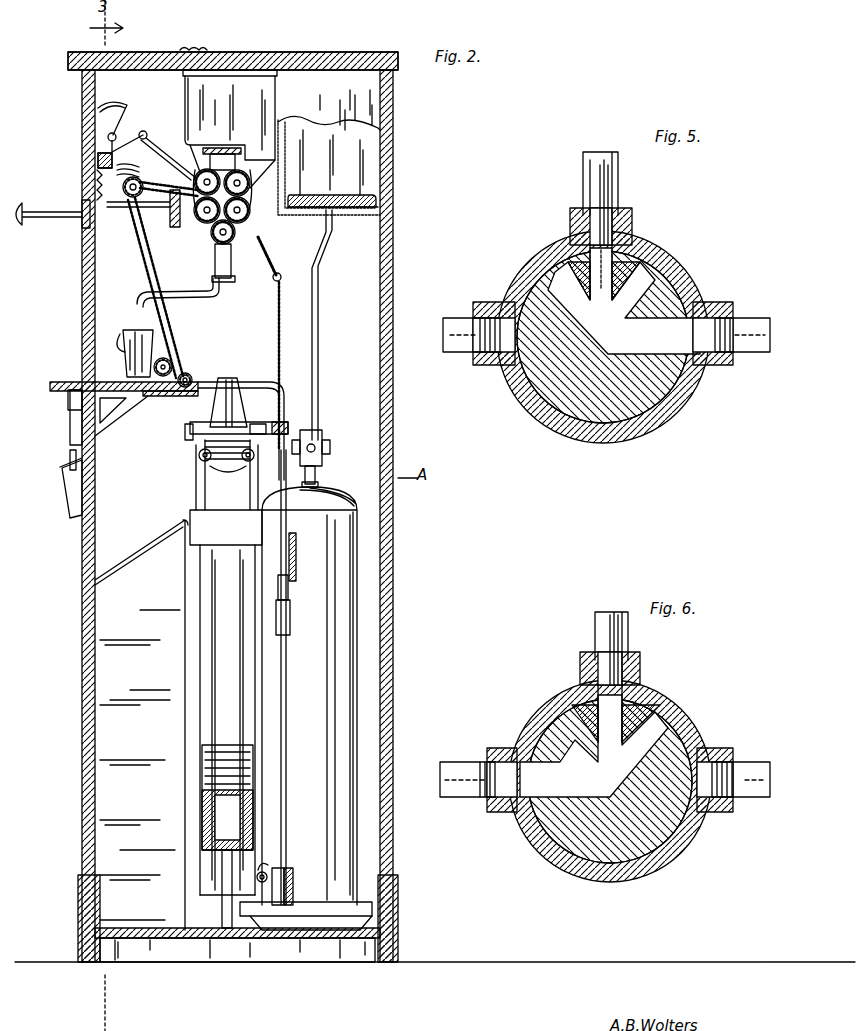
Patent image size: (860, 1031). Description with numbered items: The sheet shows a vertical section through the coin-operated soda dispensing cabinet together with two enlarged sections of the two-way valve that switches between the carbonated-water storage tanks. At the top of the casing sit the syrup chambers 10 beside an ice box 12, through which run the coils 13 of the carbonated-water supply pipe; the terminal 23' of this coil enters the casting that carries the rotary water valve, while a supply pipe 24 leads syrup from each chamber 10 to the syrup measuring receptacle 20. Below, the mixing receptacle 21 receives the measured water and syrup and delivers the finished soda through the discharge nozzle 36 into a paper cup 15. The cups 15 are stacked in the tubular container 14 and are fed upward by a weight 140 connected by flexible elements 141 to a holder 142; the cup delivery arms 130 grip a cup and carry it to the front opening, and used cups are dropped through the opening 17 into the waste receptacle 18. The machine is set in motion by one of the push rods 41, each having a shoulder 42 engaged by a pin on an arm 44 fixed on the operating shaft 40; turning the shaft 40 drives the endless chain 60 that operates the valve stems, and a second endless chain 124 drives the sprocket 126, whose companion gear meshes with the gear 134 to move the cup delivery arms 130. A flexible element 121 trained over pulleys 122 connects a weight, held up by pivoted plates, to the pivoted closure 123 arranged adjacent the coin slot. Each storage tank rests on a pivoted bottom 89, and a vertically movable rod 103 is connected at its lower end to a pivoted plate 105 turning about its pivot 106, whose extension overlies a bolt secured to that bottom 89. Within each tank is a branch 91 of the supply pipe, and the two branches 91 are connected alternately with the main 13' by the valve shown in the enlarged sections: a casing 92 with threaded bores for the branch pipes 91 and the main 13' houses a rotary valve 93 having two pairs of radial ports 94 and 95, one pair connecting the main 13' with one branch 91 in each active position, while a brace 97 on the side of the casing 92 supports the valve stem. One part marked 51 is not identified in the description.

In FIG. 2, the syrup chambers 10 is at (240, 88).
In FIG. 2, the ice box 12 is at (345, 158).
In FIG. 2, the coils of the supply pipe 13 is at (358, 175).
In FIG. 2, the terminal of the water supply pipe 23' is at (323, 216).
In FIG. 2, the supply pipe 24 is at (233, 206).
In FIG. 2, the mixing receptacle 21 is at (235, 262).
In FIG. 2, the discharge nozzle 36 is at (178, 295).
In FIG. 2, the flexible element 121 is at (283, 317).
In FIG. 2, the pulleys 122 is at (276, 283).
In FIG. 2, the gear 134 is at (199, 380).
In FIG. 2, the brace 97 is at (290, 412).
In FIG. 2, the main supply pipe 13' is at (331, 395).
In FIG. 5, the main supply pipe 13' is at (569, 226).
In FIG. 6, the main supply pipe 13' is at (590, 667).
In FIG. 2, the branch pipe 91 is at (318, 476).
In FIG. 5, the branch pipe 91 is at (750, 320).
In FIG. 6, the branch pipe 91 is at (452, 770).
In FIG. 2, the vertically movable rod 103 is at (287, 728).
In FIG. 2, the syrup measuring receptacle 20 is at (292, 622).
In FIG. 2, the tubular container 14 is at (227, 667).
In FIG. 2, the flexible elements 141 is at (198, 488).
In FIG. 2, the weight 140 is at (226, 527).
In FIG. 2, the paper drinking cups 15 is at (155, 790).
In FIG. 2, the holder 142 is at (232, 793).
In FIG. 2, the cup delivery arms 130 is at (124, 409).
In FIG. 2, the opening 17 is at (96, 488).
In FIG. 2, the waste receptacle 18 is at (141, 725).
In FIG. 2, the pivoted bottom 89 is at (343, 908).
In FIG. 2, the pivot 106 is at (290, 876).
In FIG. 2, the pivoted plates 105 is at (273, 847).
In FIG. 2, the push rods 41 is at (38, 212).
In FIG. 2, the shoulder 42 is at (95, 242).
In FIG. 2, the pivoted closure 123 is at (108, 118).
In FIG. 2, the sprocket 126 is at (122, 140).
In FIG. 2, the connecting rod 51 is at (168, 151).
In FIG. 2, the arm 44 is at (130, 198).
In FIG. 2, the operating shaft 40 is at (136, 200).
In FIG. 2, the endless chain 60 is at (175, 228).
In FIG. 2, the endless chain 124 is at (202, 325).
In FIG. 5, the rotary valve 93 is at (575, 387).
In FIG. 6, the rotary valve 93 is at (595, 842).
In FIG. 5, the pair of ports 95 is at (653, 330).
In FIG. 6, the pair of ports 95 is at (595, 692).
In FIG. 5, the pair of ports 94 is at (548, 282).
In FIG. 6, the pair of ports 94 is at (601, 749).
In FIG. 5, the valve casing 92 is at (640, 257).
In FIG. 6, the valve casing 92 is at (652, 717).